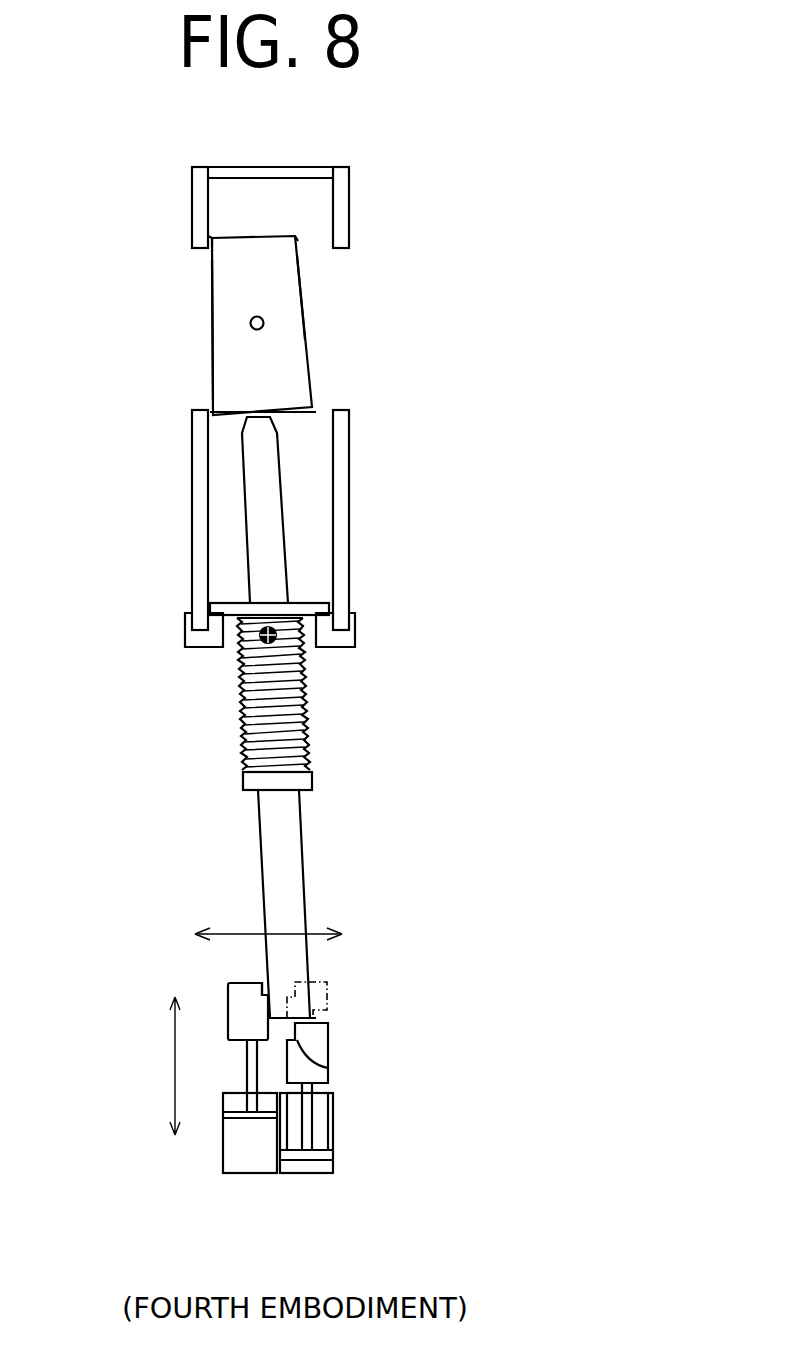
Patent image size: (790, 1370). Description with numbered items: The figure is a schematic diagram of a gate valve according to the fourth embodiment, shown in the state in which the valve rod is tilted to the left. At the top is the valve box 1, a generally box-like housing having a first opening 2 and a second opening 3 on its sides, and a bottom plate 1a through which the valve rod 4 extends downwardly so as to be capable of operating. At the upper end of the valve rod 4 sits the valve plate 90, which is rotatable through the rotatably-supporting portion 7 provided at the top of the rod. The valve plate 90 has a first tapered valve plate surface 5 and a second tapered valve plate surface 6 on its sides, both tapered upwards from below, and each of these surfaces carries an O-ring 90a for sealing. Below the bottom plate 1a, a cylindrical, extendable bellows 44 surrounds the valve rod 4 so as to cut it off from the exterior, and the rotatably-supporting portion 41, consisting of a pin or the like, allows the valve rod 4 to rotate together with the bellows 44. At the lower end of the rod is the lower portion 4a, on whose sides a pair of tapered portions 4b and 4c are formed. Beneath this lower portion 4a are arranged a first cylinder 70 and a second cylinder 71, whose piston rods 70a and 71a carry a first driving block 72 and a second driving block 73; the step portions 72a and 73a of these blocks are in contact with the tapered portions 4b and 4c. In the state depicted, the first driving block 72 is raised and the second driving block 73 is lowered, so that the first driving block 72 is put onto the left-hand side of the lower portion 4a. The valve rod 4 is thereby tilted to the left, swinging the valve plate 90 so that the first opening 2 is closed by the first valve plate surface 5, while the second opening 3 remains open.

The valve box 1 is at (350, 187).
The bottom plate 1a is at (310, 603).
The first opening 2 is at (200, 252).
The second opening 3 is at (337, 248).
The valve rod 4 is at (290, 856).
The lower portion 4a is at (288, 978).
The tapered portion 4b is at (253, 1042).
The tapered portion 4c is at (330, 1005).
The first tapered valve plate surface 5 is at (212, 328).
The second tapered valve plate surface 6 is at (298, 278).
The rotatably-supporting portion 7 is at (265, 323).
The rotatably-supporting portion 41 is at (275, 640).
The bellows 44 is at (310, 712).
The first cylinder 70 is at (255, 1160).
The piston rod 70a is at (245, 1075).
The second cylinder 71 is at (330, 1165).
The piston rod 71a is at (315, 1115).
The first driving block 72 is at (233, 1005).
The step portion 72a is at (268, 988).
The second driving block 73 is at (315, 1033).
The step portion 73a is at (322, 1065).
The valve plate 90 is at (287, 385).
The O-ring 90a is at (207, 240).